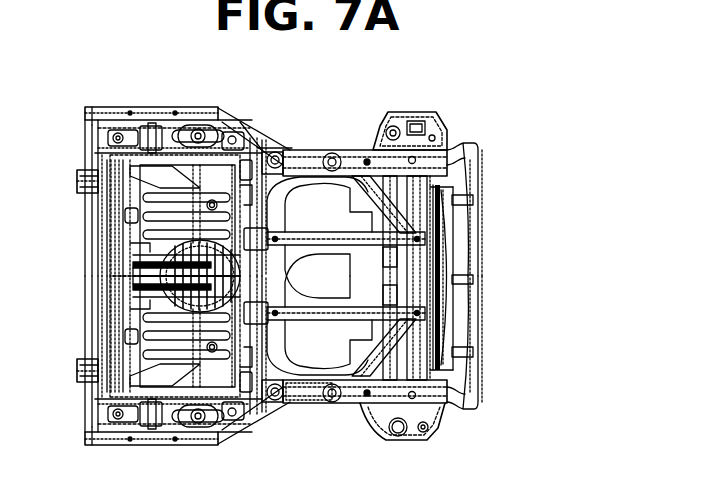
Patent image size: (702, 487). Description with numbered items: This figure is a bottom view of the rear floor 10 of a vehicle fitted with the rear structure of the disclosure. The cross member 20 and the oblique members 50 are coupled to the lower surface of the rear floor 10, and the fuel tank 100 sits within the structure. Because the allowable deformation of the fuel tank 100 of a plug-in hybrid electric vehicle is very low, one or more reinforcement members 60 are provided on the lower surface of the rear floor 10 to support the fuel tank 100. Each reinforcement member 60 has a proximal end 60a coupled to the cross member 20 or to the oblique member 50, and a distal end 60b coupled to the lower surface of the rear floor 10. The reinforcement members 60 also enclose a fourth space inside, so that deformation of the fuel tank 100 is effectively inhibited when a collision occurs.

The rear floor 10 is at (260, 152).
The fuel tank 100 is at (328, 208).
The oblique member 50 is at (378, 147).
The reinforcement member 60 is at (428, 232).
The proximal end 60a is at (437, 316).
The distal end 60b is at (293, 400).
The cross member 20 is at (440, 258).